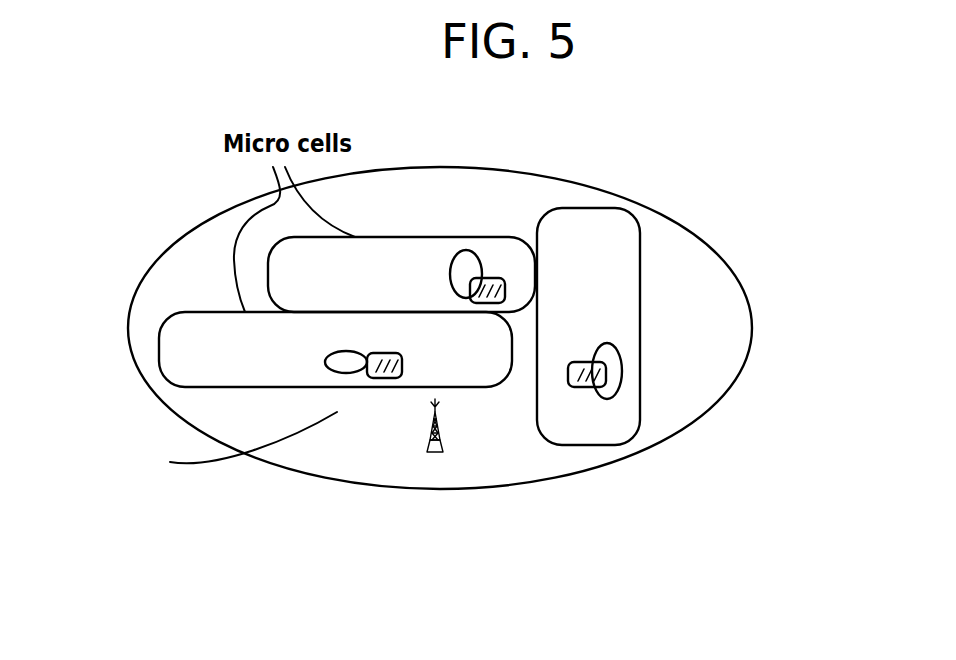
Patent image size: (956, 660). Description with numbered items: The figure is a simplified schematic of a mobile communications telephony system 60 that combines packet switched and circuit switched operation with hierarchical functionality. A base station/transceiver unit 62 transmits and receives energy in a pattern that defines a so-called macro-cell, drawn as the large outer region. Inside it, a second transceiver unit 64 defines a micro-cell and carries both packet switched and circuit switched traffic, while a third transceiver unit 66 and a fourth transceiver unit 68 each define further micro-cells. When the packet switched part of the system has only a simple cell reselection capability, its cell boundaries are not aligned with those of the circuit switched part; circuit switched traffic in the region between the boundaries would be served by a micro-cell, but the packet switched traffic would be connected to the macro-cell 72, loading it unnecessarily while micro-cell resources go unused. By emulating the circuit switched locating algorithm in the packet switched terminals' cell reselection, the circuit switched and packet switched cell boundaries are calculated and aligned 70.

The mobile communications telephony system 60 is at (750, 202).
The base station/transceiver unit 62 is at (445, 448).
The second transceiver unit 64 is at (607, 373).
The third transceiver unit 66 is at (383, 380).
The fourth transceiver unit 68 is at (491, 278).
The aligned cell boundaries 70 is at (548, 410).
The macro-cell connection of packet switched traffic 72 is at (597, 391).